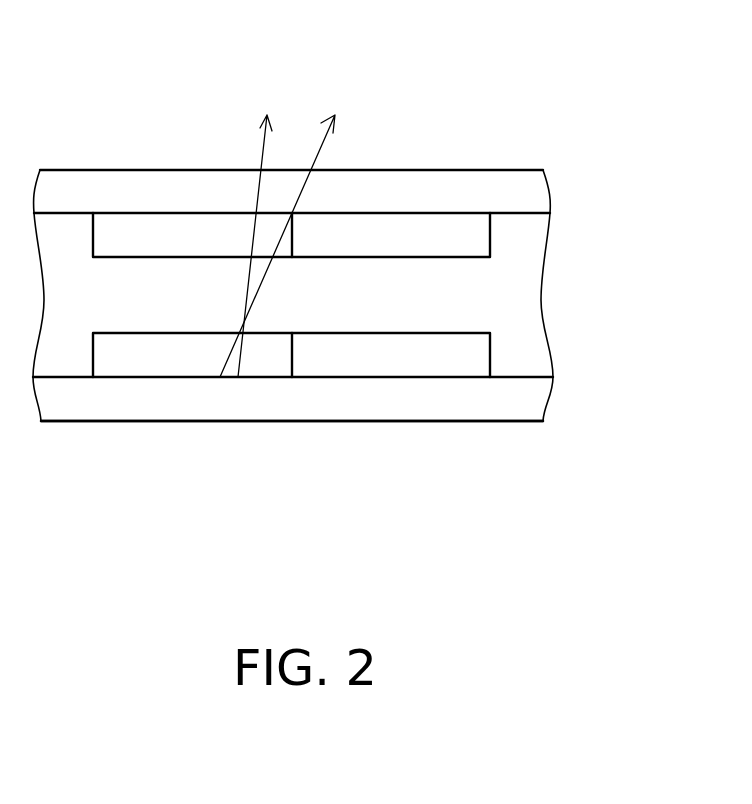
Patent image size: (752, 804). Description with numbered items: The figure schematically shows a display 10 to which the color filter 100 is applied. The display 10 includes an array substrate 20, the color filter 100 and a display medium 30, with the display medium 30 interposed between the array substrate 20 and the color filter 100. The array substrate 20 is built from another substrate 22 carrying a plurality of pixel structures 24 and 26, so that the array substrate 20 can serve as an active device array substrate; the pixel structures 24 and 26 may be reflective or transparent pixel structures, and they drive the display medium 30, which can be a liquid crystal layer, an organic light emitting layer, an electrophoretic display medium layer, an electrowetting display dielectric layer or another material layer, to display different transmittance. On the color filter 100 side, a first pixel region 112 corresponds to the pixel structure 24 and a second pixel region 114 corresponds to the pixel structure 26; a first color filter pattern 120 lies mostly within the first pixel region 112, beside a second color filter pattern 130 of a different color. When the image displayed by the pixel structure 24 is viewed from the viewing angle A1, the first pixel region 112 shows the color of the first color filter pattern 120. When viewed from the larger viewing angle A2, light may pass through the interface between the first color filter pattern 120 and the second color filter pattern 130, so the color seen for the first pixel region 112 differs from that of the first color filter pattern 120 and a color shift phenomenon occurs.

The display 10 is at (336, 252).
The array substrate 20 is at (329, 410).
The substrate 22 is at (443, 395).
The pixel structure 24 is at (127, 358).
The pixel structure 26 is at (340, 360).
The display medium 30 is at (510, 293).
The color filter 100 is at (336, 180).
The first color filter pattern 120 is at (148, 230).
The second color filter pattern 130 is at (457, 232).
The first pixel region 112 is at (93, 56).
The second pixel region 114 is at (292, 56).
The viewing angle A1 is at (260, 223).
The viewing angle A2 is at (286, 223).